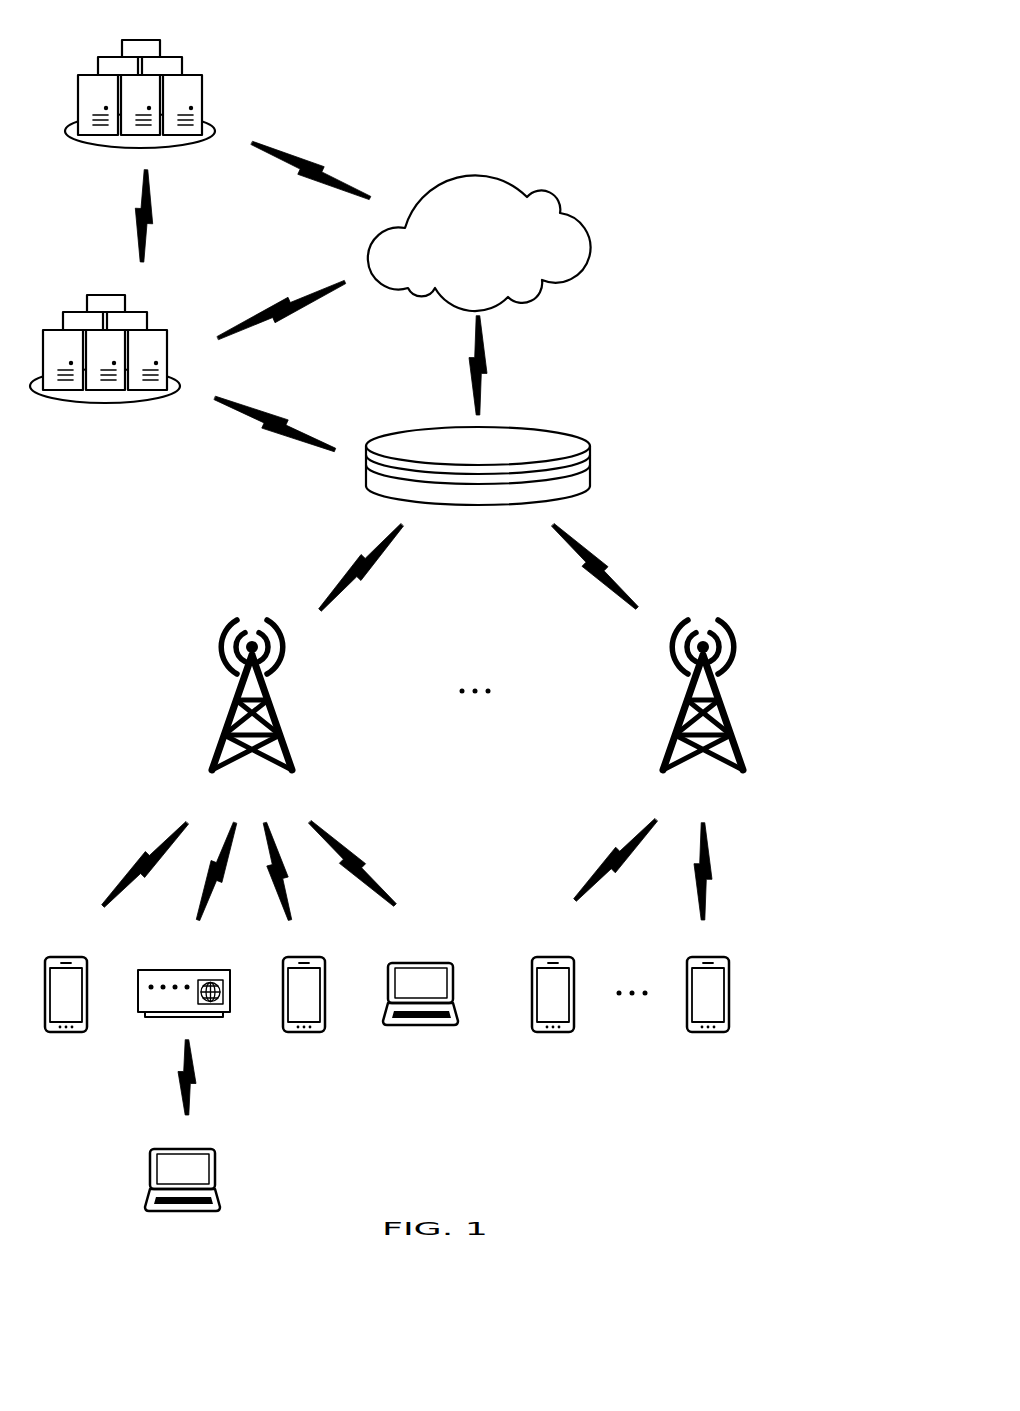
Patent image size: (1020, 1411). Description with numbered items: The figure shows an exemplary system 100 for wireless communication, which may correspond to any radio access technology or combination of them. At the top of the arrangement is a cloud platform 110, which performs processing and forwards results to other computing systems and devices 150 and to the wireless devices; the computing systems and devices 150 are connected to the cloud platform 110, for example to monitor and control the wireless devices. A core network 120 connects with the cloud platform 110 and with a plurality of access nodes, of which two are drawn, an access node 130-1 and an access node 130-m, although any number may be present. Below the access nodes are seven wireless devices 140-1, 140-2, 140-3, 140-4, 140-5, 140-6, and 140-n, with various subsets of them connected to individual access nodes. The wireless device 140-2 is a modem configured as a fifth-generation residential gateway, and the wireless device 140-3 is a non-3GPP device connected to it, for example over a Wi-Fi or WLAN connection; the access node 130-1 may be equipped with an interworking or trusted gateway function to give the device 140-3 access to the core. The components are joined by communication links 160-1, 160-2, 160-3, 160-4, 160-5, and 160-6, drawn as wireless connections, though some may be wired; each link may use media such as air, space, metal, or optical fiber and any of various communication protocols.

The system 100 is at (731, 103).
The cloud platform 110 is at (592, 253).
The core network 120 is at (592, 458).
The access node 130-1 is at (292, 722).
The access node 130-m is at (742, 722).
The wireless device 140-1 is at (64, 1032).
The wireless device 140-2 is at (228, 1012).
The wireless device 140-3 is at (193, 1210).
The wireless device 140-4 is at (312, 1032).
The wireless device 140-5 is at (430, 1027).
The wireless device 140-6 is at (557, 1032).
The wireless device 140-n is at (712, 1032).
The computing systems and devices 150 is at (183, 63).
The communication link 160-1 is at (312, 162).
The communication link 160-2 is at (155, 220).
The communication link 160-3 is at (485, 358).
The communication link 160-4 is at (270, 432).
The communication link 160-5 is at (608, 558).
The communication link 160-6 is at (360, 852).